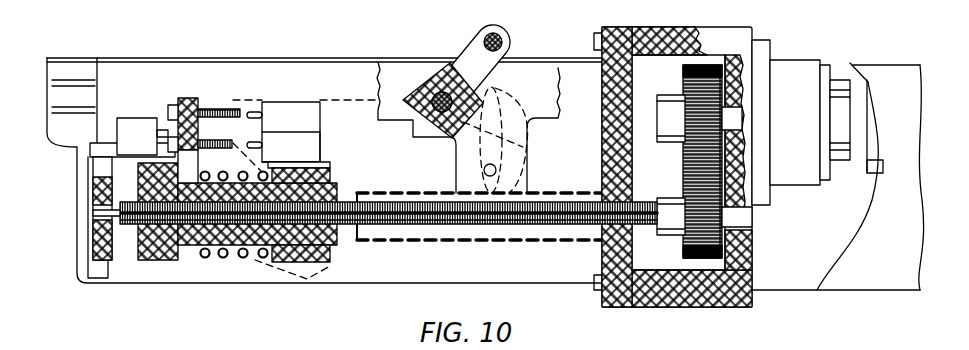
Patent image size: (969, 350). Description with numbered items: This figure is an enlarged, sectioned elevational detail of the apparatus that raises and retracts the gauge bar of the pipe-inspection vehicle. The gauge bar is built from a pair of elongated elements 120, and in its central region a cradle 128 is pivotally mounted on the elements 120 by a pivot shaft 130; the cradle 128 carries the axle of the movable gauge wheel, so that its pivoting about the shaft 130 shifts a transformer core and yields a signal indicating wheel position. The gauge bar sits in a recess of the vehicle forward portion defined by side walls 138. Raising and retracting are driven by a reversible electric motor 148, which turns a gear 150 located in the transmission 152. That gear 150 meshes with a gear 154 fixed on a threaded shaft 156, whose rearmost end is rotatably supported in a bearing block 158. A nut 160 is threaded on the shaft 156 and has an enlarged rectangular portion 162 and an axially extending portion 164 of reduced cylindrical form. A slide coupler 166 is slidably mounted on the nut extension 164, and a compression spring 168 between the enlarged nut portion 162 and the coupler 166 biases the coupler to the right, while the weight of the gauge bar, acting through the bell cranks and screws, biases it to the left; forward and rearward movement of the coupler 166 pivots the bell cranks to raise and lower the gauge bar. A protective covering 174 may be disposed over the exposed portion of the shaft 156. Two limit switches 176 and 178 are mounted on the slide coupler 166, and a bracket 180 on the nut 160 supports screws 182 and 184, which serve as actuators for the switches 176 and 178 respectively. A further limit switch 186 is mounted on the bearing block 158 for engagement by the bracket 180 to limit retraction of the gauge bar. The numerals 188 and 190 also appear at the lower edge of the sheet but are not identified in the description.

The elongated element 120 is at (527, 72).
The cradle 128 is at (472, 53).
The pivot shaft 130 is at (437, 97).
The side wall 138 is at (575, 182).
The reversible electric motor 148 is at (860, 177).
The gear 150 is at (723, 60).
The transmission 152 is at (607, 113).
The gear 154 is at (683, 188).
The threaded shaft 156 is at (553, 242).
The bearing block 158 is at (108, 262).
The nut 160 is at (175, 242).
The enlarged rectangular portion 162 is at (133, 150).
The axially extending portion 164 is at (337, 247).
The slide coupler 166 is at (333, 163).
The compression spring 168 is at (248, 258).
The protective covering 174 is at (493, 243).
The limit switch 176 is at (292, 102).
The limit switch 178 is at (323, 143).
The bracket 180 is at (185, 98).
The screw 182 is at (213, 109).
The screw 184 is at (218, 140).
The limit switch 186 is at (137, 120).
The lead 188 is at (144, 343).
The lead 190 is at (201, 343).